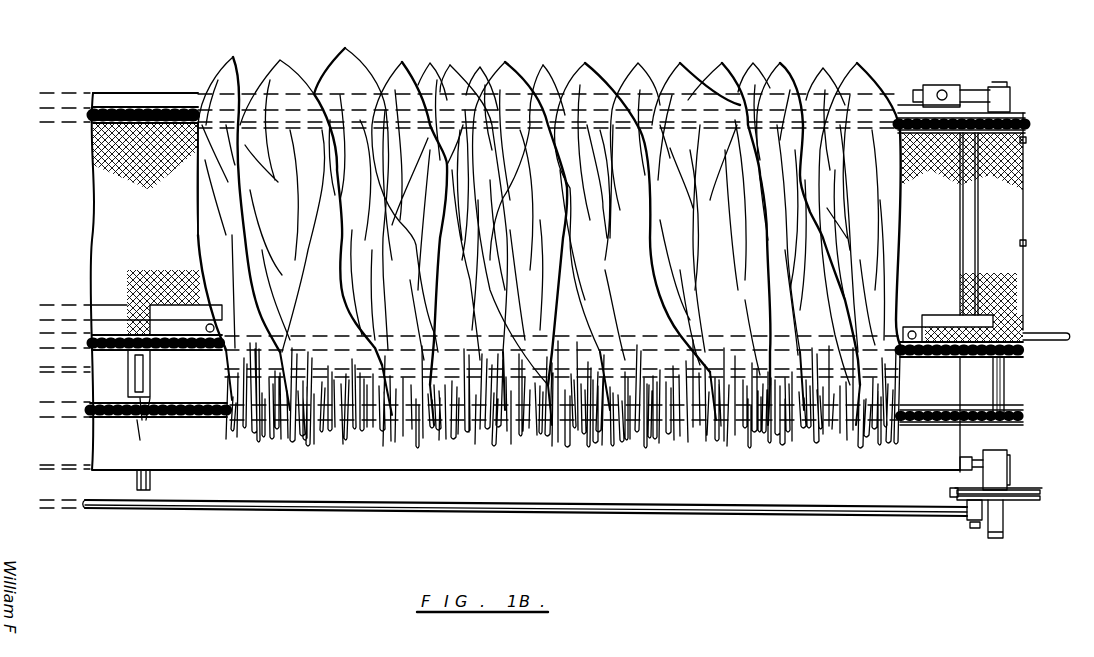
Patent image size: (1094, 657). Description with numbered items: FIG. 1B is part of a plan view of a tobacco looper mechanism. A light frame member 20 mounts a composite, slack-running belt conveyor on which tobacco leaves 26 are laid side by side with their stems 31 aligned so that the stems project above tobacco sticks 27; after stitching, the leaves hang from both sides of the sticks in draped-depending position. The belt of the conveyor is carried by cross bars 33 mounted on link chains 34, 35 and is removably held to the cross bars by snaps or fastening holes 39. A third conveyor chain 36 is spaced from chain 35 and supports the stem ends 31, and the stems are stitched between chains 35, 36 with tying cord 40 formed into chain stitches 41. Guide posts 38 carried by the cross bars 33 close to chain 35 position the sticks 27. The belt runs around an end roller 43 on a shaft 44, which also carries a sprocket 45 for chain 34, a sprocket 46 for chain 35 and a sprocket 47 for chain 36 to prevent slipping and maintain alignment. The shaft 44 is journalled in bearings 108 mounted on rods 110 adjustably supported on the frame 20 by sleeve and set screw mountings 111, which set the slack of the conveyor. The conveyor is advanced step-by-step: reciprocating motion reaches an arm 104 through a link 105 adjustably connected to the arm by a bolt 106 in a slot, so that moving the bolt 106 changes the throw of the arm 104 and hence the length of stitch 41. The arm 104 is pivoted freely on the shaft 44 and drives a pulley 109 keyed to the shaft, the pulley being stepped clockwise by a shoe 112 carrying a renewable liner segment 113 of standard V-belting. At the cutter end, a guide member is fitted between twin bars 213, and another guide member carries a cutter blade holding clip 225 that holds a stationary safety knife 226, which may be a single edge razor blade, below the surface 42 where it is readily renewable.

The frame member 20 is at (213, 473).
The tobacco leaves 26 is at (215, 196).
The tobacco sticks 27 is at (115, 305).
The stem 31 is at (222, 433).
The cross bars 33 is at (200, 350).
The link chain 34 is at (120, 124).
The link chain 35 is at (140, 305).
The third conveyor chain 36 is at (102, 403).
The guide posts 38 is at (200, 278).
The fastening holes 39 is at (1027, 140).
The tying cord 40 is at (1010, 372).
The chain stitches 41 is at (497, 343).
The surface 42 is at (148, 92).
The end roller 43 is at (1003, 232).
The shaft 44 is at (1006, 395).
The sprocket 45 is at (1027, 117).
The sprocket 46 is at (1027, 353).
The sprocket 47 is at (1027, 420).
The arm 104 is at (1010, 500).
The link 105 is at (300, 505).
The bolt 106 is at (973, 528).
The bearings 108 is at (1005, 97).
The pulley 109 is at (1030, 488).
The rods 110 is at (977, 93).
The sleeve and set screw mountings 111 is at (937, 88).
The shoe 112 is at (950, 492).
The liner segment 113 is at (957, 502).
The twin bars 213 is at (140, 420).
The cutter blade holding clip 225 is at (147, 403).
The safety knife 226 is at (153, 383).